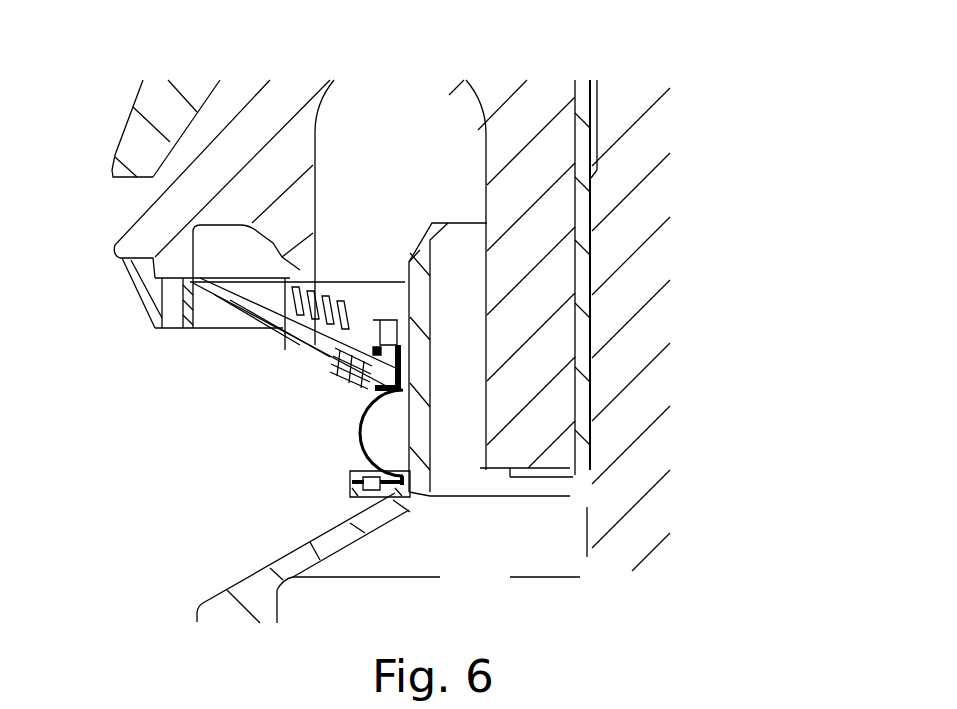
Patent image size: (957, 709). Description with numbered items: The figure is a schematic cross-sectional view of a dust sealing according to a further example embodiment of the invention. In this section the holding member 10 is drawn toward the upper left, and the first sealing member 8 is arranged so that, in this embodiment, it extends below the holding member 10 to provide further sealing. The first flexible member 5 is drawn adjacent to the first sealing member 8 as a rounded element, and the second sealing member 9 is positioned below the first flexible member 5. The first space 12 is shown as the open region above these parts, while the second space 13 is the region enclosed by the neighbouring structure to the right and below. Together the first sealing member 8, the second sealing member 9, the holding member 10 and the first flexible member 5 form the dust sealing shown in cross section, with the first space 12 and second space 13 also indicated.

The first flexible member 5 is at (360, 425).
The first sealing member 8 is at (302, 353).
The second sealing member 9 is at (350, 488).
The holding member 10 is at (157, 290).
The first space 12 is at (383, 128).
The second space 13 is at (400, 437).